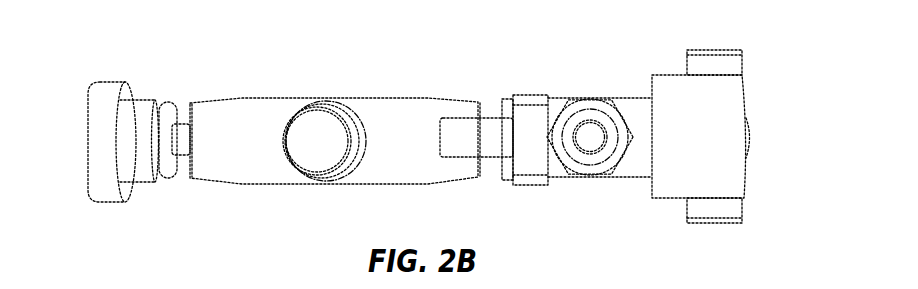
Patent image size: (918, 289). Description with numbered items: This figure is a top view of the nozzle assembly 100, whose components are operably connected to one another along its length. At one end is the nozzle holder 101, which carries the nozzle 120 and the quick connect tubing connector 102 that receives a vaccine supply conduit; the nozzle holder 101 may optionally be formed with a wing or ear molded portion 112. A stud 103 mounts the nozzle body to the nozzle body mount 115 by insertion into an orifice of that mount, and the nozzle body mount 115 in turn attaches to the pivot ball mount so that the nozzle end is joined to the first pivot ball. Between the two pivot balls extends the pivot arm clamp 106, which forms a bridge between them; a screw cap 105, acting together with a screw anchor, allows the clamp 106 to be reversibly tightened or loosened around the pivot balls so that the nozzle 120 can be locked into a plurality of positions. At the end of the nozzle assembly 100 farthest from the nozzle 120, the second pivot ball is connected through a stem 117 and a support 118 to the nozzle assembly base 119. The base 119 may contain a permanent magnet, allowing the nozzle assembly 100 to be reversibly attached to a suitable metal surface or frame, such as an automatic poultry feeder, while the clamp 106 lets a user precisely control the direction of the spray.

The nozzle assembly 100 is at (272, 77).
The nozzle holder 101 is at (717, 154).
The quick connect tubing connector 102 is at (590, 113).
The stud 103 is at (486, 137).
The screw cap 105 is at (326, 116).
The pivot arm clamp 106 is at (417, 113).
The wing/ear molded portion of the nozzle holder 112 is at (707, 65).
The nozzle body mount 115 is at (531, 117).
The stem 117 is at (180, 142).
The support 118 is at (147, 120).
The nozzle assembly base 119 is at (102, 110).
The nozzle 120 is at (750, 138).